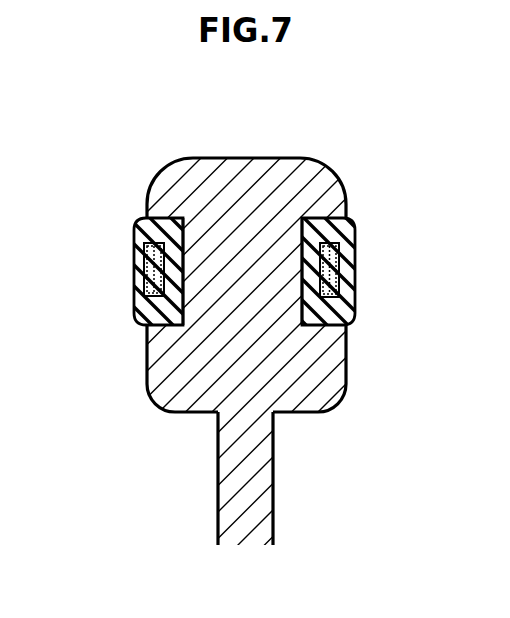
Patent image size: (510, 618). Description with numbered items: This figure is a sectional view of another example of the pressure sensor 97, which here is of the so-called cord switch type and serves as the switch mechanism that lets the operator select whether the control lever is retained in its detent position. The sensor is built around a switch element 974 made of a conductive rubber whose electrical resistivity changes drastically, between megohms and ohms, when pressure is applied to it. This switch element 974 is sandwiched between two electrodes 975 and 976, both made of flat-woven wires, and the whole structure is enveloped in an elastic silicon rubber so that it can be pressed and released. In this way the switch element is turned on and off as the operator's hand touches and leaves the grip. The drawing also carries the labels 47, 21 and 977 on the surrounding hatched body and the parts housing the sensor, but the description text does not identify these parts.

The cap body 47 is at (315, 172).
The stem 21 is at (288, 505).
The pressure sensor 97 is at (256, 279).
The seal ring block 977 is at (134, 222).
The electrode 976 is at (137, 273).
The switch element 974 is at (147, 254).
The electrode 975 is at (191, 255).